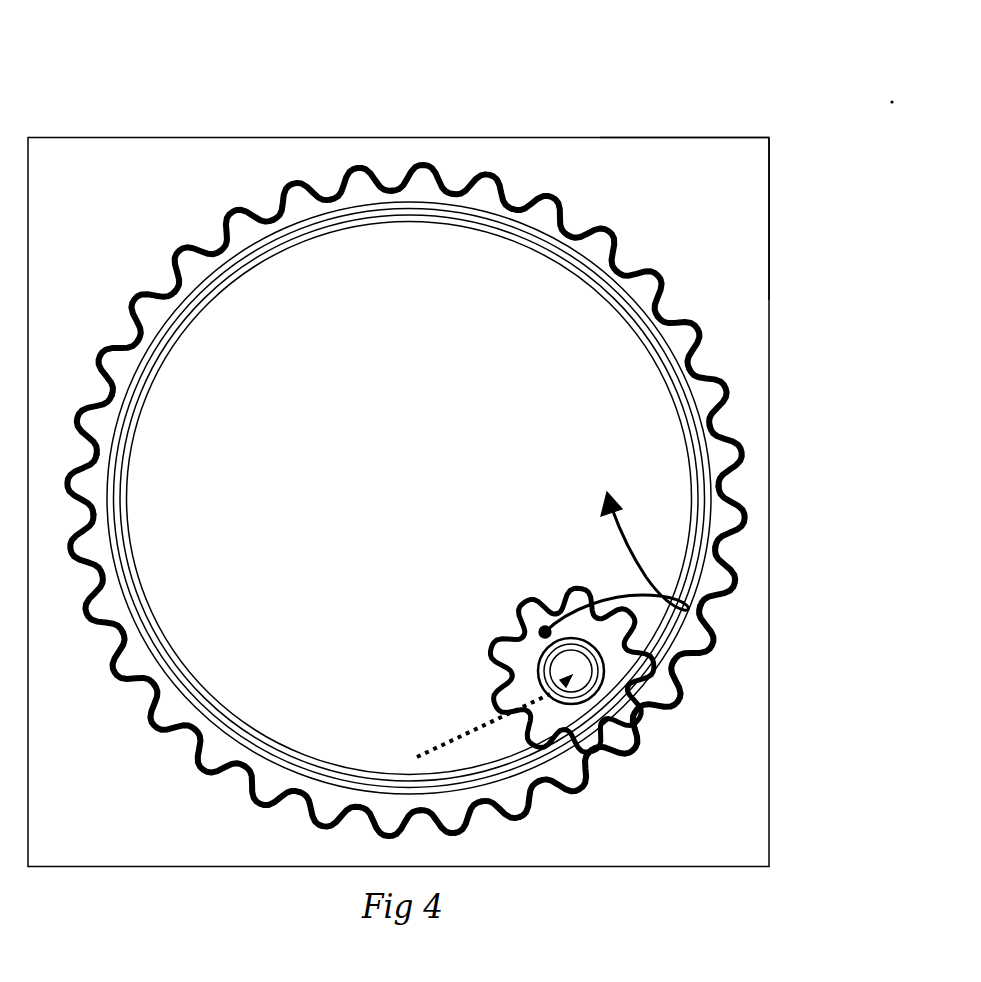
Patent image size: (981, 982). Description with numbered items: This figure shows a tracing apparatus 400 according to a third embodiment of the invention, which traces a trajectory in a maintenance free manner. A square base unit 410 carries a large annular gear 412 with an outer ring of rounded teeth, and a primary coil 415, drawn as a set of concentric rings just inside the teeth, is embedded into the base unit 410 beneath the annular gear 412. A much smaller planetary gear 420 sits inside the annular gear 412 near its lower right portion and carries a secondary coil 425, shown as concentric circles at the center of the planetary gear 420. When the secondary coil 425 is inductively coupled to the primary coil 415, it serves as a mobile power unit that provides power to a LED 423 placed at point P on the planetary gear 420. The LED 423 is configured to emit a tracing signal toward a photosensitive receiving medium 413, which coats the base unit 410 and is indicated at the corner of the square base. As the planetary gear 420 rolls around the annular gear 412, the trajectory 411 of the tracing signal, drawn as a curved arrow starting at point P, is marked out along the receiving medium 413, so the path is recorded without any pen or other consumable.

The tracing apparatus 400 is at (512, 124).
The base unit 410 is at (770, 280).
The trajectory 411 is at (604, 494).
The annular gear 412 is at (240, 207).
The photosensitive receiving medium 413 is at (713, 168).
The primary coil 415 is at (197, 293).
The planetary gear 420 is at (618, 668).
The LED 423 is at (540, 628).
The secondary coil 425 is at (540, 678).